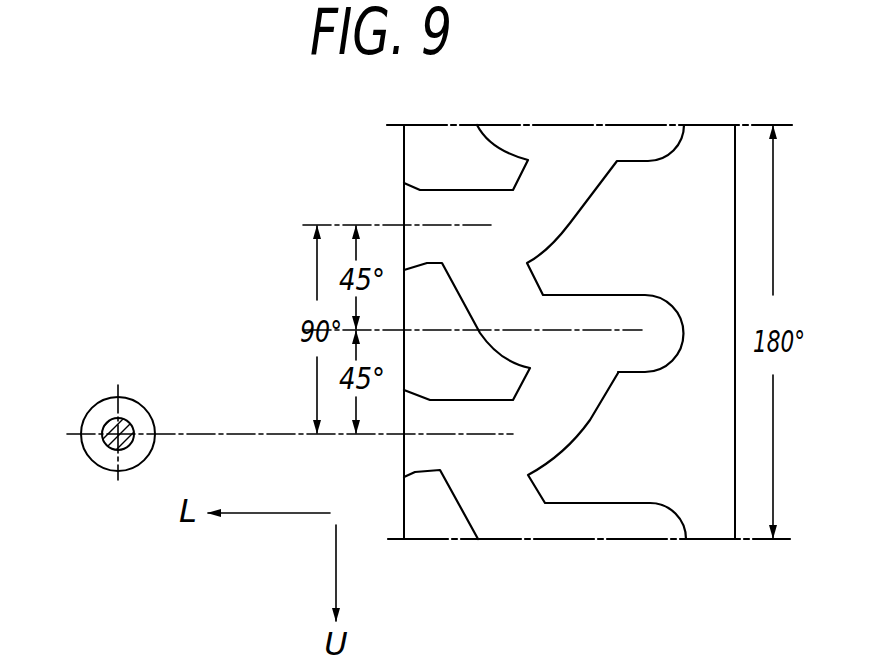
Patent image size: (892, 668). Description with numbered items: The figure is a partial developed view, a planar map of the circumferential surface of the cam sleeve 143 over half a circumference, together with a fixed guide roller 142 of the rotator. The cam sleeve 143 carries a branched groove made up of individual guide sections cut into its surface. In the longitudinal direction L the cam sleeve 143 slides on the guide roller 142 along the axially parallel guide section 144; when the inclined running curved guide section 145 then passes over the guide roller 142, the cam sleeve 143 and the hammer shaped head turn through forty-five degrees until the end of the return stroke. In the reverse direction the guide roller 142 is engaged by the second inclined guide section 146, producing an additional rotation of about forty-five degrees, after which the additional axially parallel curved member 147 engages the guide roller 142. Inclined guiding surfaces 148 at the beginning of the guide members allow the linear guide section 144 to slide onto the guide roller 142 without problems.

The guide roller 142 is at (138, 412).
The cam sleeve 143 is at (400, 157).
The axially parallel guide section 144 is at (467, 418).
The inclined running curved guide section 145 is at (580, 407).
The second inclined guide section 146 is at (520, 287).
The additional axially parallel curved member 147 is at (462, 207).
The inclined guiding surfaces 148 is at (414, 469).